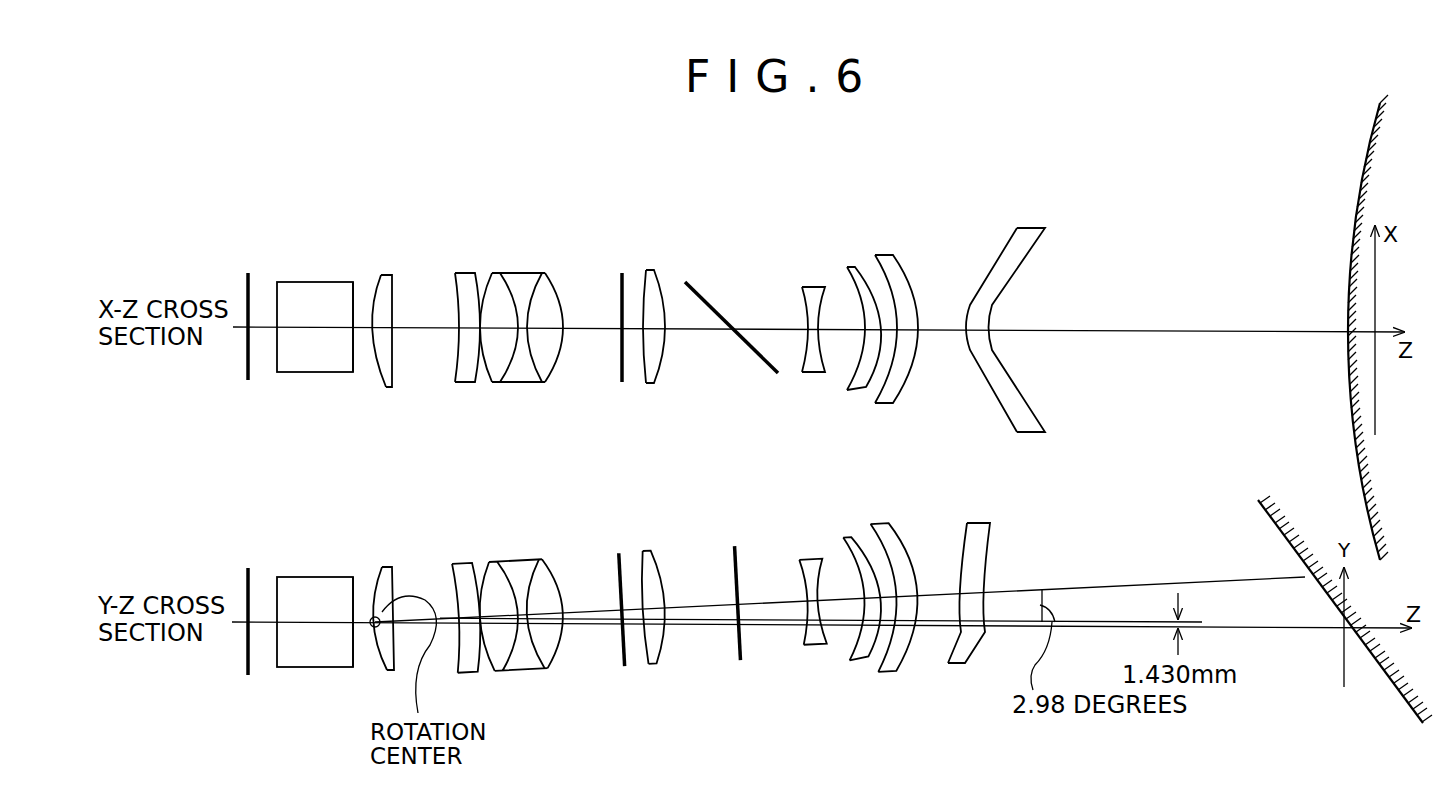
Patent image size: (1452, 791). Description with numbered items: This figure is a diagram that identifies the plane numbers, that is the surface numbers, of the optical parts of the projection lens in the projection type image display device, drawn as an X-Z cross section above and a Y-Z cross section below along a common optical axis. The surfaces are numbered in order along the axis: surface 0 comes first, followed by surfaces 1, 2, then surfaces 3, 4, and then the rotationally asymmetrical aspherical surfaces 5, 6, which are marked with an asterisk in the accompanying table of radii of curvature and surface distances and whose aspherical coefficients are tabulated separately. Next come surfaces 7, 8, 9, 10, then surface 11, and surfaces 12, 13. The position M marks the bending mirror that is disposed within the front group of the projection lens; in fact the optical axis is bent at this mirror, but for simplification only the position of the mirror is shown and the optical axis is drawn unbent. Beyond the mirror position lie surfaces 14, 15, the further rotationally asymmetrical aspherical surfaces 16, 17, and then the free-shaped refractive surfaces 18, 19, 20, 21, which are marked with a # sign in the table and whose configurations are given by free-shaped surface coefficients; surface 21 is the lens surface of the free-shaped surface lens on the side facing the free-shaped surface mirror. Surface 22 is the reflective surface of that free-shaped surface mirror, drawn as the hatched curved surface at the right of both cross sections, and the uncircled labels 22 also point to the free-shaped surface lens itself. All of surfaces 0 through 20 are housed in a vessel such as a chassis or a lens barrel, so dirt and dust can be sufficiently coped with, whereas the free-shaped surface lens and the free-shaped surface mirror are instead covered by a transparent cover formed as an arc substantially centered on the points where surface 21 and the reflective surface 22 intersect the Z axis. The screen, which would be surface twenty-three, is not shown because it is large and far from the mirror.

The surface S0 0 is at (249, 374).
The surface S1 1 is at (278, 366).
The surface S2 2 is at (349, 597).
The surface S3 3 is at (376, 374).
The surface S4 4 is at (390, 374).
The rotationally asymmetrical aspherical surface S5 5 is at (457, 370).
The rotationally asymmetrical aspherical surface S6 6 is at (474, 376).
The surface S7 7 is at (488, 557).
The surface S8 8 is at (503, 376).
The surface S9 9 is at (542, 557).
The surface S10 10 is at (562, 376).
The surface S11 11 is at (623, 552).
The surface S12 12 is at (647, 380).
The surface S13 13 is at (663, 566).
The bending mirror position M is at (752, 350).
The surface S14 14 is at (800, 557).
The surface S15 15 is at (822, 365).
The rotationally asymmetrical aspherical surface S16 16 is at (847, 547).
The rotationally asymmetrical aspherical surface S17 17 is at (863, 391).
The free-shaped refractive surface S18 18 is at (880, 401).
The free-shaped refractive surface S19 19 is at (917, 560).
The free-shaped refractive surface S20 20 is at (998, 407).
The free-shaped refractive surface S21 21 is at (993, 555).
The reflective surface S22 of free-shaped surface mirror 22 is at (1347, 373).